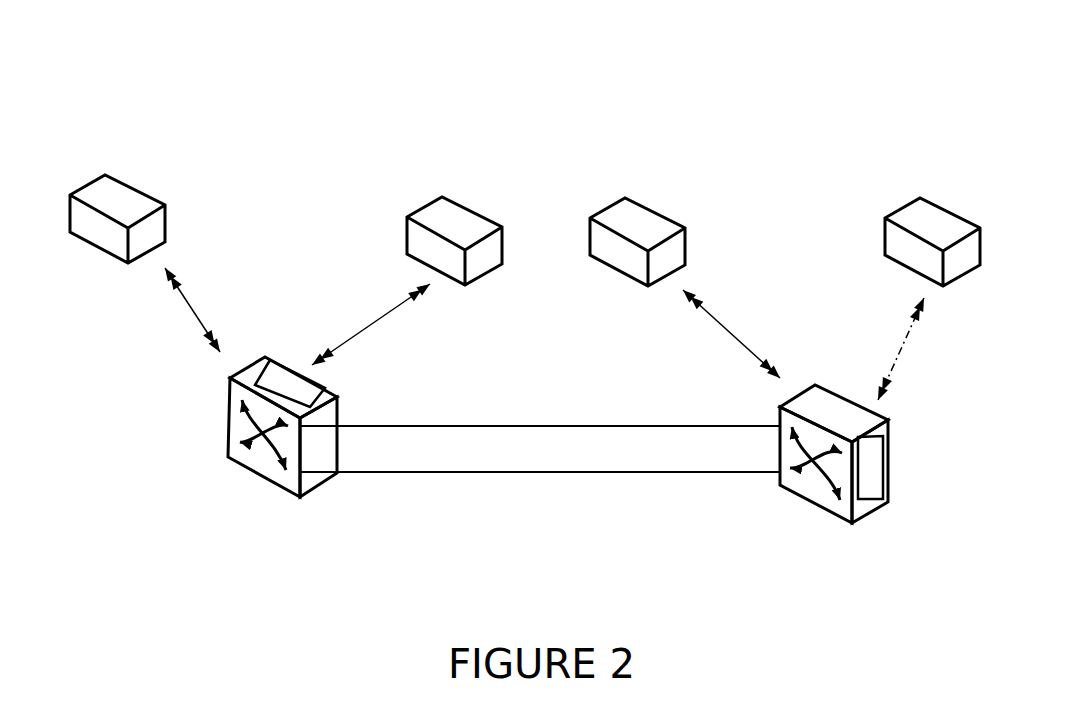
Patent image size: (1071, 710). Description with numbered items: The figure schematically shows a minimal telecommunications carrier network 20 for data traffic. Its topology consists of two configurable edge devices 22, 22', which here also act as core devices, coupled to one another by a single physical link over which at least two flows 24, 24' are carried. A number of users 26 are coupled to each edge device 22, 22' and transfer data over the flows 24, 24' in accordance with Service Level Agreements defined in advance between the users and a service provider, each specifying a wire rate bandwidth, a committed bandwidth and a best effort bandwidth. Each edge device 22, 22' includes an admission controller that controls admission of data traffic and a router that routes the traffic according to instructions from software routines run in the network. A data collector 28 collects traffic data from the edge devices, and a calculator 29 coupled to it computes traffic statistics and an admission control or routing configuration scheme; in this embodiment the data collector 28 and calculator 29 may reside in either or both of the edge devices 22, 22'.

The telecommunications carrier network 20 is at (540, 140).
The configurable edge device 22 is at (276, 432).
The configurable edge device 22' is at (853, 470).
The flow 24 is at (540, 376).
The flow 24' is at (540, 520).
The user 26 is at (407, 217).
The data collector 28 is at (288, 386).
The calculator 29 is at (870, 467).